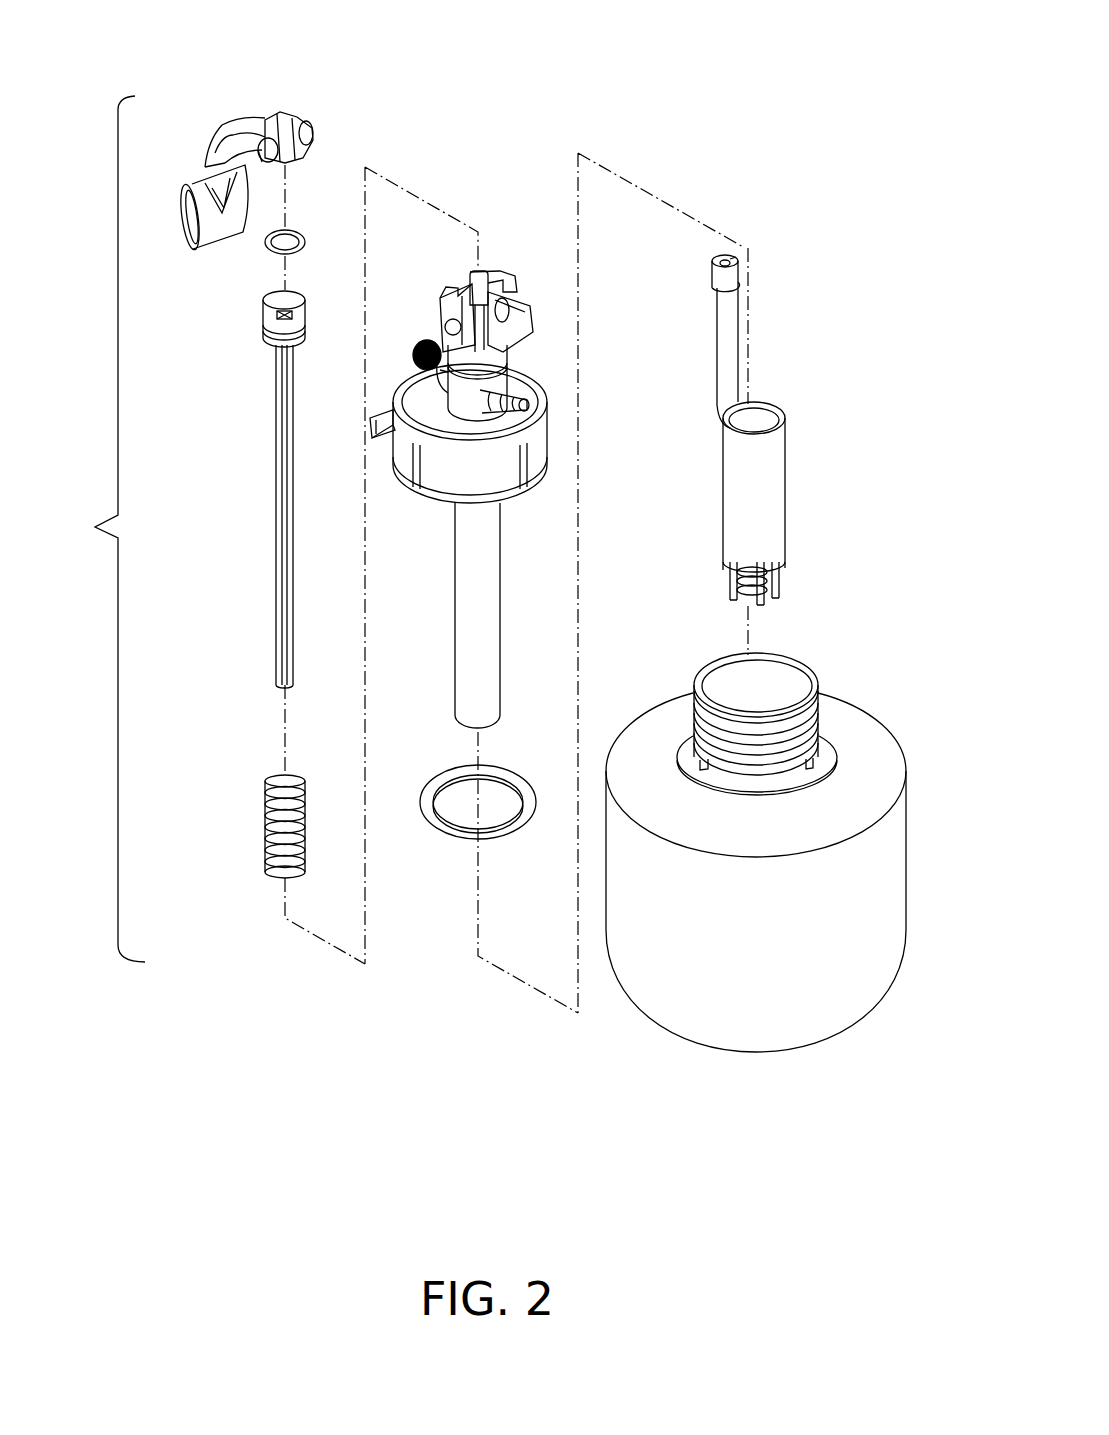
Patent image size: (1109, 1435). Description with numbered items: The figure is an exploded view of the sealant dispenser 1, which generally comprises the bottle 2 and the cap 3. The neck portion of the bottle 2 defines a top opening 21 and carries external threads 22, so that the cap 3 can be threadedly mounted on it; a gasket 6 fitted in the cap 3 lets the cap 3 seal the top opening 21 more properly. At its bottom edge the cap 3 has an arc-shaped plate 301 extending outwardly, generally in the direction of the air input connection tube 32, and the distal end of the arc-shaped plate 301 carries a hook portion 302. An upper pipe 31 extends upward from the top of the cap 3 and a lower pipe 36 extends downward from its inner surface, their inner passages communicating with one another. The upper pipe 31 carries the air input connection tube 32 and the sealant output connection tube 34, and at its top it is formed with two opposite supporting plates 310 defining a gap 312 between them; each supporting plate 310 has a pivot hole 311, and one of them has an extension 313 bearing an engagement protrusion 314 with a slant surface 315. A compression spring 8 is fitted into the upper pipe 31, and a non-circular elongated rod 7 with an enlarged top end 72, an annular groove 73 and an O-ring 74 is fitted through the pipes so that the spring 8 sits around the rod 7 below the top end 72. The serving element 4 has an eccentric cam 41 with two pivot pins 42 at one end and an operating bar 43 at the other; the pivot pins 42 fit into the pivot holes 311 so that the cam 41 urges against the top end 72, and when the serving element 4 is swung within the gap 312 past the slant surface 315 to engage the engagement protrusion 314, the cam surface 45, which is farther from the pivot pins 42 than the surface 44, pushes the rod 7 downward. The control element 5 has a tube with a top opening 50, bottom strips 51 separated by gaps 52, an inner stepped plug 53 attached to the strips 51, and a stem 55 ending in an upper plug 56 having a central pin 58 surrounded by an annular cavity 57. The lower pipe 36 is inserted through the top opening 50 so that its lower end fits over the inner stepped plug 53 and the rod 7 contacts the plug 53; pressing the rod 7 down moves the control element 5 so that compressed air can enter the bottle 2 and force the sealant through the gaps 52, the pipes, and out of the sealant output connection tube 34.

The sealant dispenser 1 is at (108, 529).
The bottle 2 is at (781, 876).
The top opening 21 is at (790, 693).
The external threads 22 is at (818, 722).
The cap 3 is at (470, 421).
The upper pipe 31 is at (467, 402).
The air input connection tube 32 is at (413, 357).
The sealant output connection tube 34 is at (530, 403).
The lower pipe 36 is at (475, 643).
The arc-shaped plate 301 is at (385, 430).
The hook portion 302 is at (385, 414).
The supporting plates 310 is at (460, 285).
The pivot hole 311 is at (443, 322).
The gap 312 is at (462, 283).
The extension 313 is at (535, 312).
The engagement protrusion 314 is at (500, 297).
The slant surface 315 is at (480, 270).
The serving element 4 is at (278, 163).
The eccentric cam 41 is at (262, 118).
The pivot pins 42 is at (310, 123).
The operating bar 43 is at (213, 230).
The surface 44 is at (285, 162).
The surface 45 is at (287, 110).
The control element 5 is at (758, 408).
The top opening 50 is at (767, 423).
The strips 51 is at (778, 583).
The gaps 52 is at (778, 568).
The inner stepped plug 53 is at (728, 585).
The stem 55 is at (728, 352).
The upper plug 56 is at (720, 280).
The annular cavity 57 is at (720, 258).
The central pin 58 is at (728, 265).
The gasket 6 is at (455, 827).
The elongated rod 7 is at (228, 489).
The top end 72 is at (267, 320).
The annular groove 73 is at (268, 340).
The O-ring 74 is at (268, 253).
The compression spring 8 is at (265, 835).